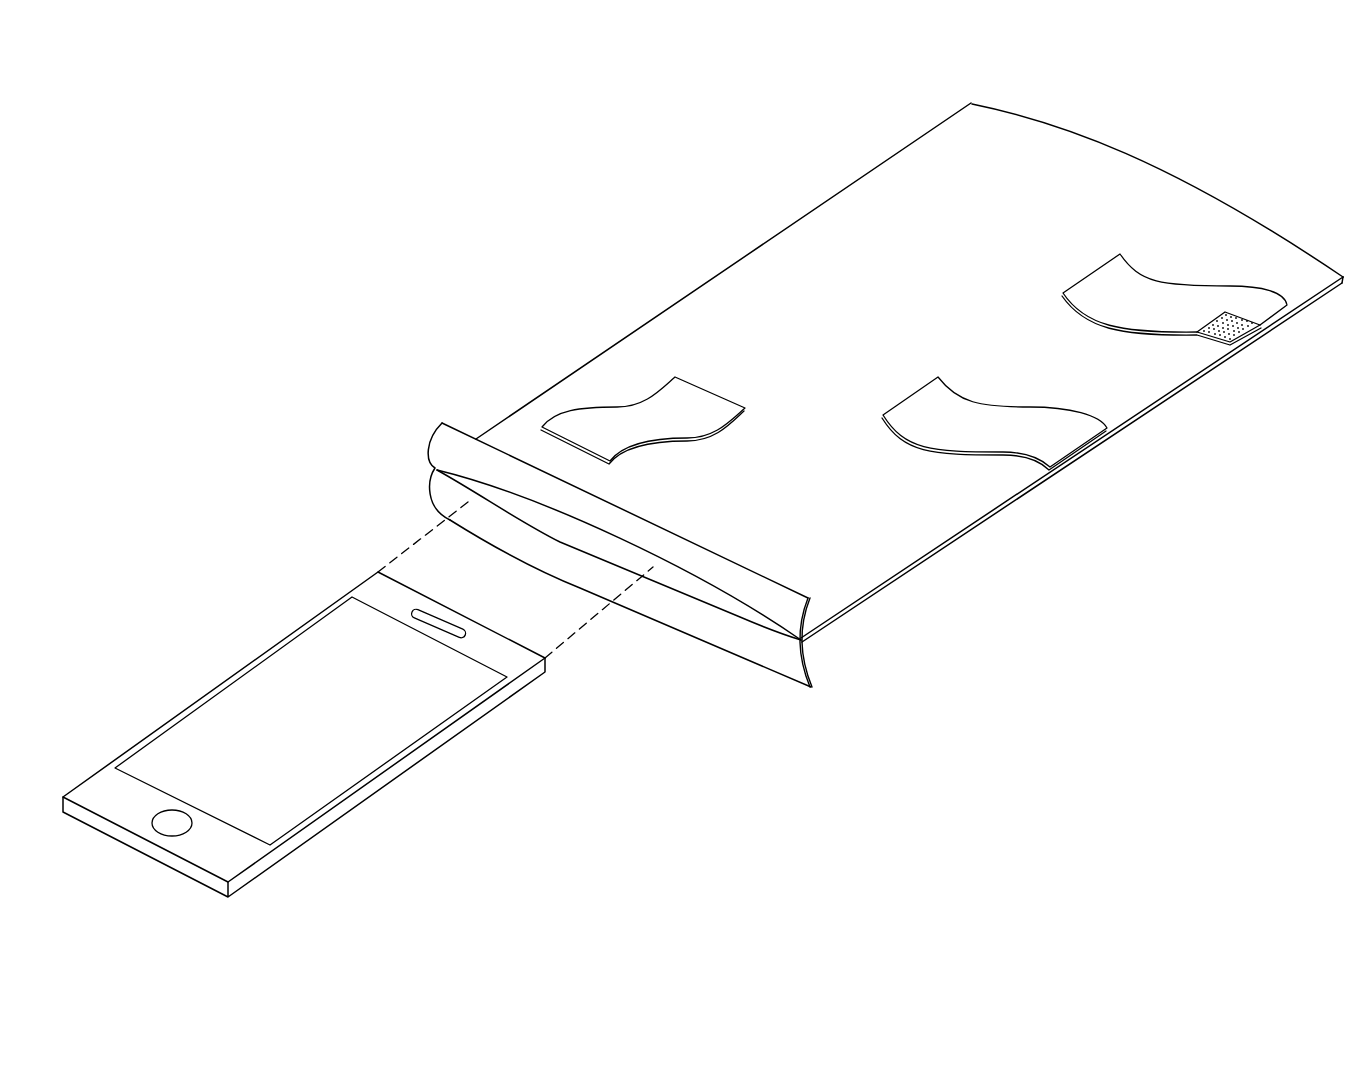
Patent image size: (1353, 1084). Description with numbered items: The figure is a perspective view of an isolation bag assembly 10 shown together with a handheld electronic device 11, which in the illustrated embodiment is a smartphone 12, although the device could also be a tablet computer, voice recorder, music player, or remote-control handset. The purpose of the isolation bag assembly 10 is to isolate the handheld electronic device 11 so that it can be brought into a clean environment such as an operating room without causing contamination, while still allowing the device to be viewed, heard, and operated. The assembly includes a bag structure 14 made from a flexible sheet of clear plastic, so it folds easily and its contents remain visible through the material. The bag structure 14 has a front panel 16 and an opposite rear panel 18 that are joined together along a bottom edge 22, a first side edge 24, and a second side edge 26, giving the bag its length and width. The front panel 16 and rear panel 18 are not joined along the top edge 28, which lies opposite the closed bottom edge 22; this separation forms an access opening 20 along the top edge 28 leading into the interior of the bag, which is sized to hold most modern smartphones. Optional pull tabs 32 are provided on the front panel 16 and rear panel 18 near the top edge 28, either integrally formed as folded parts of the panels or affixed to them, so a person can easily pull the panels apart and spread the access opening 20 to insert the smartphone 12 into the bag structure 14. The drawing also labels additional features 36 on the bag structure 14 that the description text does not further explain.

The isolation bag assembly 10 is at (705, 177).
The handheld electronic device 11 is at (257, 627).
The smartphone 12 is at (157, 727).
The bag structure 14 is at (703, 310).
The front panel 16 is at (910, 500).
The rear panel 18 is at (870, 587).
The access opening 20 is at (680, 578).
The bottom edge 22 is at (1207, 197).
The first side edge 24 is at (1147, 413).
The second side edge 26 is at (833, 193).
The top edge 28 is at (797, 645).
The pull tabs 32 is at (443, 493).
The pockets 36 is at (870, 417).